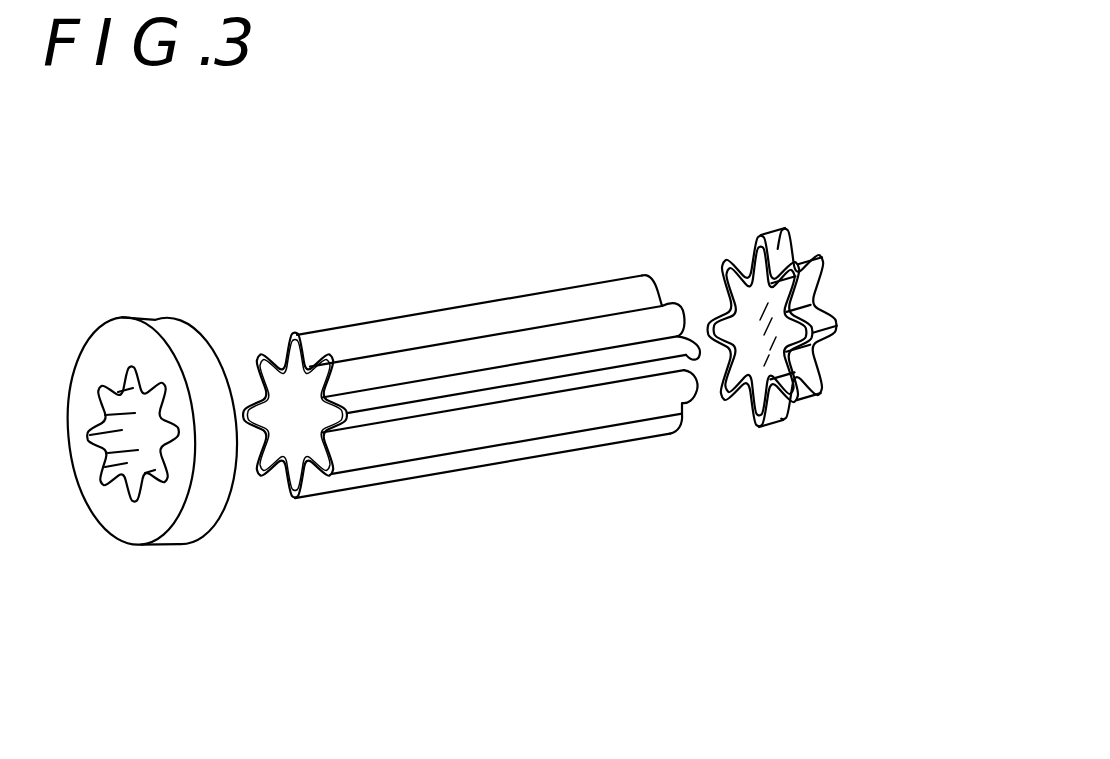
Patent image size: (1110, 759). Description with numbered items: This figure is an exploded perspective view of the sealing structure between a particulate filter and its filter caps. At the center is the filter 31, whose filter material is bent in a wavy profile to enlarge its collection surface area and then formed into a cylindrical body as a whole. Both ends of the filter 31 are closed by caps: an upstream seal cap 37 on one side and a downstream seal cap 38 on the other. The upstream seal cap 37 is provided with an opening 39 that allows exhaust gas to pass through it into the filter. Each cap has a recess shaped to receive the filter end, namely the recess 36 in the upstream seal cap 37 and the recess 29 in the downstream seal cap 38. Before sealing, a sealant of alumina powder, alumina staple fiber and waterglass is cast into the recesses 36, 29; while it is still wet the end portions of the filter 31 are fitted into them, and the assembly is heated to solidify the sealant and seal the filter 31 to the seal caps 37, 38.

The recess 29 is at (788, 235).
The filter 31 is at (514, 282).
The recess 36 is at (130, 380).
The upstream seal cap 37 is at (162, 317).
The downstream seal cap 38 is at (797, 373).
The opening 39 is at (168, 448).